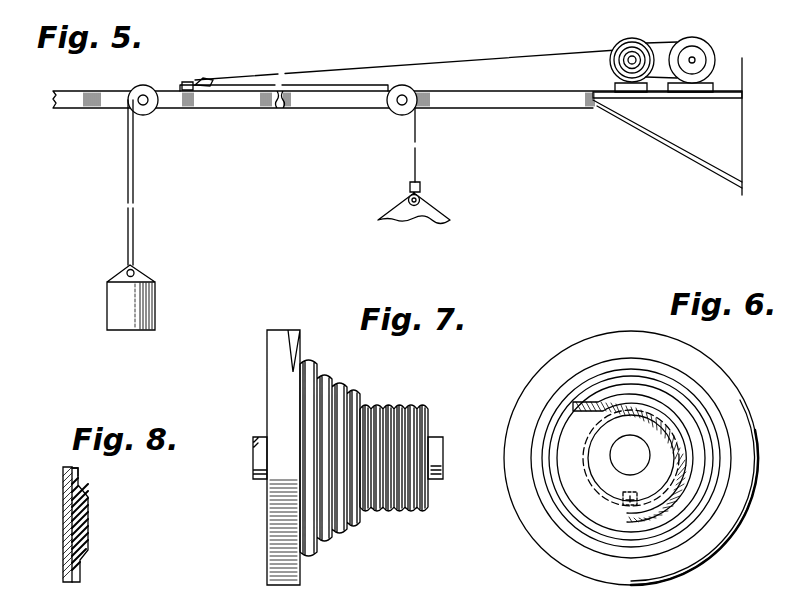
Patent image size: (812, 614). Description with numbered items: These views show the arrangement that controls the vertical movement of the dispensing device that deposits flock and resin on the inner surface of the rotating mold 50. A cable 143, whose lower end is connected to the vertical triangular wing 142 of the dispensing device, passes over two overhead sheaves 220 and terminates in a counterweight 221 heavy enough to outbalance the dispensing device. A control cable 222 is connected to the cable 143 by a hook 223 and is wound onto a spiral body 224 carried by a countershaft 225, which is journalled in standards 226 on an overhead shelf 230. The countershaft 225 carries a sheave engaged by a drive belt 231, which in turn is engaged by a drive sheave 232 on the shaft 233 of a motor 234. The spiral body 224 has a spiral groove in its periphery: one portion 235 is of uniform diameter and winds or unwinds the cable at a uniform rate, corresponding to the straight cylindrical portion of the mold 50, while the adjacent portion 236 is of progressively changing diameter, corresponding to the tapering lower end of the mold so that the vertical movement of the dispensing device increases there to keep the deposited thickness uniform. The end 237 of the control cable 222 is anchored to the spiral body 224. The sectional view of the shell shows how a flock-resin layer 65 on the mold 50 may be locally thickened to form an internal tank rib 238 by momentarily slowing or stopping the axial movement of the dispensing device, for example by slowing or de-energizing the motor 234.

In FIG. 5, the overhead sheaves 220 is at (148, 113).
In FIG. 5, the counterweight 221 is at (157, 297).
In FIG. 5, the control cable 222 is at (481, 60).
In FIG. 6, the control cable 222 is at (577, 400).
In FIG. 5, the hook 223 is at (205, 80).
In FIG. 5, the spiral body 224 is at (610, 66).
In FIG. 6, the spiral body 224 is at (756, 389).
In FIG. 7, the spiral body 224 is at (263, 520).
In FIG. 5, the countershaft 225 is at (632, 58).
In FIG. 6, the countershaft 225 is at (630, 438).
In FIG. 7, the countershaft 225 is at (440, 438).
In FIG. 5, the standards 226 is at (622, 95).
In FIG. 5, the overhead shelf 230 is at (742, 97).
In FIG. 5, the drive belt 231 is at (666, 43).
In FIG. 5, the drive sheave 232 is at (698, 58).
In FIG. 5, the shaft 233 is at (742, 70).
In FIG. 5, the motor 234 is at (703, 42).
In FIG. 6, the portion of the spiral groove of uniform diameter 235 is at (588, 488).
In FIG. 7, the portion of the spiral groove of uniform diameter 235 is at (428, 402).
In FIG. 6, the portion of the spiral groove of progressively changing diameter 236 is at (602, 520).
In FIG. 7, the portion of the spiral groove of progressively changing diameter 236 is at (362, 385).
In FIG. 6, the end of the cable 237 is at (642, 489).
In FIG. 5, the vertical triangular wing 142 is at (440, 205).
In FIG. 5, the cable 143 is at (418, 163).
In FIG. 8, the rotating mold 50 is at (63, 530).
In FIG. 8, the flock-resin layer 65 is at (80, 477).
In FIG. 8, the internal tank rib 238 is at (89, 525).